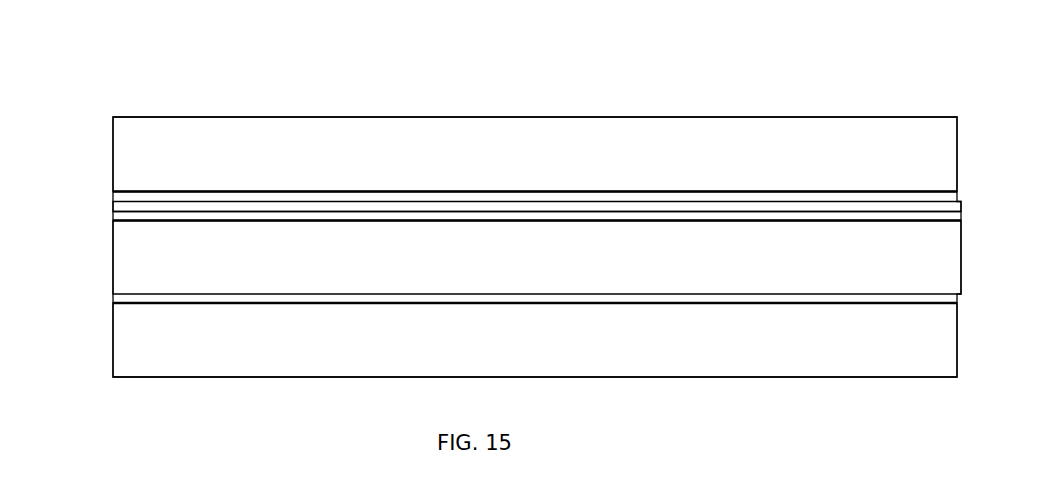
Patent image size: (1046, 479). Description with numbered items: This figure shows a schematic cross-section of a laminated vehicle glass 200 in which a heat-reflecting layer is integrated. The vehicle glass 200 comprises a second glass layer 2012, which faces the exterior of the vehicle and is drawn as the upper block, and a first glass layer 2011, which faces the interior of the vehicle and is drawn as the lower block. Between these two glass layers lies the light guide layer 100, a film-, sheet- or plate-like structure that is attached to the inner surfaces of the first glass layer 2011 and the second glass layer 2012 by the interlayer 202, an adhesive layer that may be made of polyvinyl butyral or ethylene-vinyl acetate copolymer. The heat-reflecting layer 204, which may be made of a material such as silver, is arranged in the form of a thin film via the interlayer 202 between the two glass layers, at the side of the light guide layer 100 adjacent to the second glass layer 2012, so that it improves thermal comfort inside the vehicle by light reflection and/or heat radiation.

The vehicle glass 200 is at (421, 73).
The second glass layer 2012 is at (287, 157).
The first glass layer 2011 is at (338, 368).
The interlayer 202 is at (121, 193).
The heat-reflecting layer 204 is at (120, 204).
The light guide layer 100 is at (124, 278).